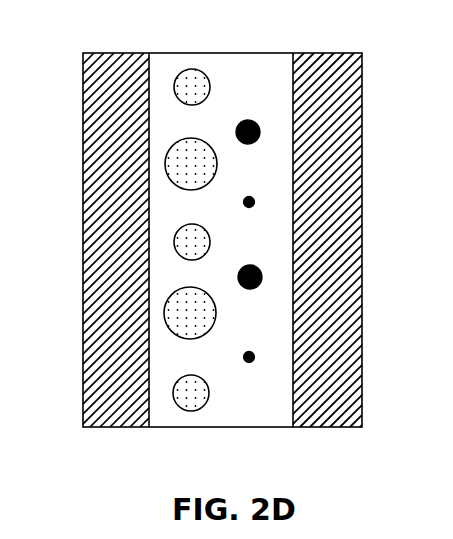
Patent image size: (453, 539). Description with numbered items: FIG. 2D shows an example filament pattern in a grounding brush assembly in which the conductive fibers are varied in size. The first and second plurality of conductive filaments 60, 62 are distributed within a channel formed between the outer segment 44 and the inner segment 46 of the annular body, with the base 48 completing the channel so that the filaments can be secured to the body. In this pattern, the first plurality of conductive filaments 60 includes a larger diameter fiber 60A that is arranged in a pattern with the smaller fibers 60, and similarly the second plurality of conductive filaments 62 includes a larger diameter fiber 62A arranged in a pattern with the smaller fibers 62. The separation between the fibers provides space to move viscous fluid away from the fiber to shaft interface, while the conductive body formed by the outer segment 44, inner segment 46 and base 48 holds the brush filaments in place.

The outer segment 44 is at (362, 228).
The inner segment 46 is at (83, 226).
The base 48 is at (270, 53).
The first plurality of conductive filaments 60 is at (180, 72).
The larger diameter fiber 60A is at (203, 136).
The second plurality of conductive filaments 62 is at (253, 367).
The larger diameter fiber 62A is at (247, 261).